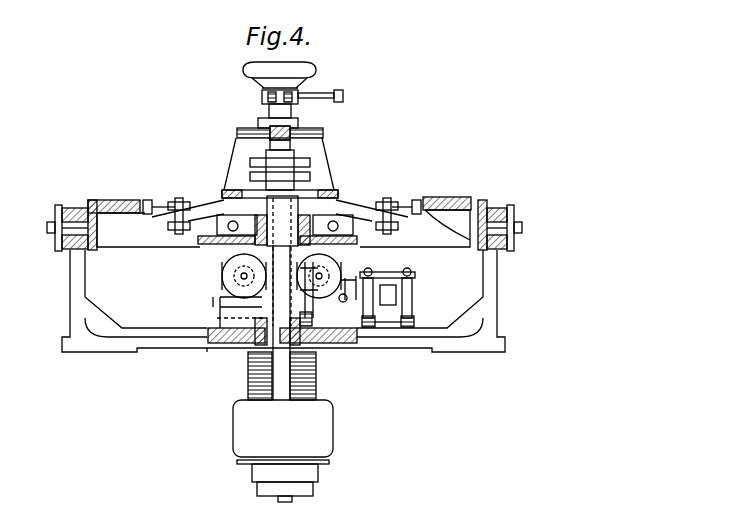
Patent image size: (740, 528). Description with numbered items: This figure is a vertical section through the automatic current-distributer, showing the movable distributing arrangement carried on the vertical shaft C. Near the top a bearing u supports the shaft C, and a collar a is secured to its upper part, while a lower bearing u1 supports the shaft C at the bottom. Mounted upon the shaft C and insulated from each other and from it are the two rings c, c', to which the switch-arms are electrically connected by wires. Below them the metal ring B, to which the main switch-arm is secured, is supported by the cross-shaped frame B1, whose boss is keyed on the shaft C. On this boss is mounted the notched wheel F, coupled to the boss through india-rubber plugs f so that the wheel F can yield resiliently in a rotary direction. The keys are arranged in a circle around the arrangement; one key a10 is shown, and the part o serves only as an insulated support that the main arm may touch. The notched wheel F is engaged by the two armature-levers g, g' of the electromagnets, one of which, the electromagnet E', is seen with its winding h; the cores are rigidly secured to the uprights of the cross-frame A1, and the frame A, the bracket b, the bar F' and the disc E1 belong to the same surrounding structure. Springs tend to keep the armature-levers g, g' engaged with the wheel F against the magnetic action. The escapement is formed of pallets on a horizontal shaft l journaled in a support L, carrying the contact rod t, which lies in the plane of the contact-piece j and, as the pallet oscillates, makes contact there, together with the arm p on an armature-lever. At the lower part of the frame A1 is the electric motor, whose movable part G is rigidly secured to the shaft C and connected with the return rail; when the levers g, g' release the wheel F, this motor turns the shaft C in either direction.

The electromagnet winding h is at (302, 100).
The bearing u is at (323, 135).
The ring c is at (261, 157).
The ring c' is at (259, 176).
The metal ring B is at (334, 196).
The shaft C is at (282, 261).
The cross-shaped frame B1 is at (172, 228).
The india-rubber plug f is at (240, 212).
The bar F' is at (264, 253).
The frame A is at (72, 250).
The bracket b is at (122, 218).
The collar a is at (140, 194).
The key a10 is at (468, 190).
The electromagnet E' is at (232, 276).
The disc E1 is at (334, 270).
The armature-lever g' is at (226, 307).
The contact-plate rod t is at (370, 272).
The support L is at (393, 299).
The horizontal shaft l is at (414, 274).
The part o o is at (338, 309).
The notched wheel F is at (282, 322).
The cross-frame A1 is at (188, 350).
The escapement arm p is at (318, 360).
The bearing u1 is at (312, 340).
The armature-lever g is at (375, 360).
The contact-piece j is at (405, 328).
The movable part of motor G is at (283, 451).